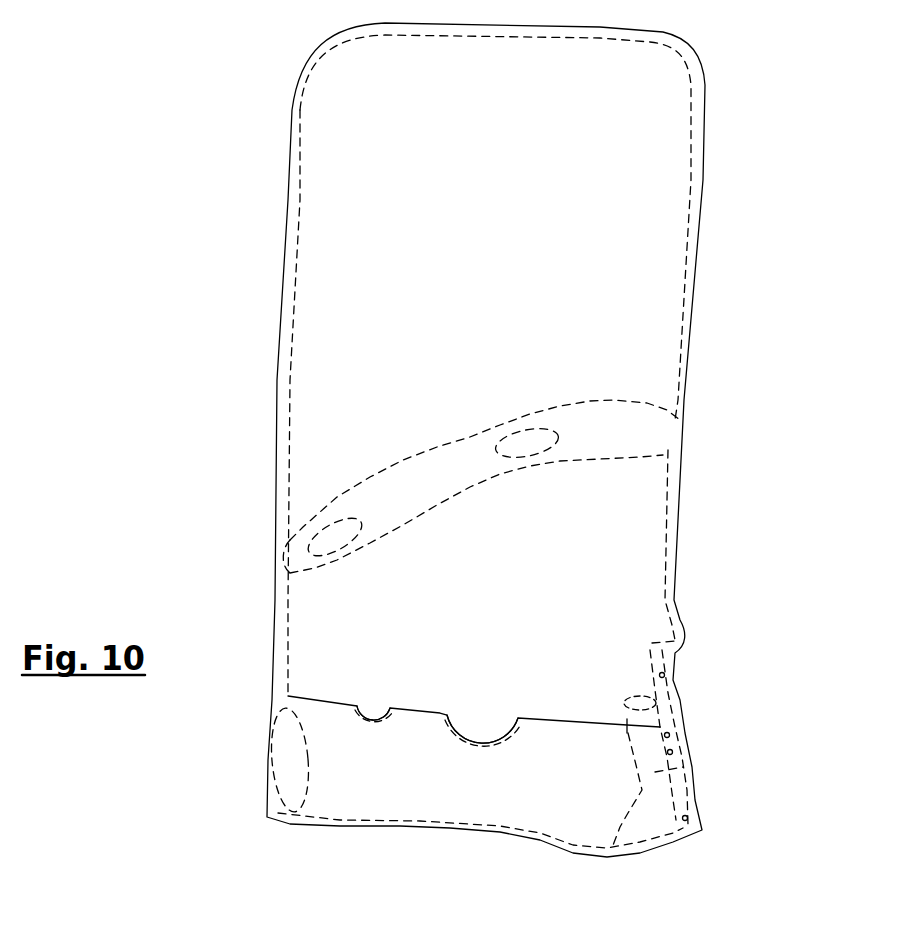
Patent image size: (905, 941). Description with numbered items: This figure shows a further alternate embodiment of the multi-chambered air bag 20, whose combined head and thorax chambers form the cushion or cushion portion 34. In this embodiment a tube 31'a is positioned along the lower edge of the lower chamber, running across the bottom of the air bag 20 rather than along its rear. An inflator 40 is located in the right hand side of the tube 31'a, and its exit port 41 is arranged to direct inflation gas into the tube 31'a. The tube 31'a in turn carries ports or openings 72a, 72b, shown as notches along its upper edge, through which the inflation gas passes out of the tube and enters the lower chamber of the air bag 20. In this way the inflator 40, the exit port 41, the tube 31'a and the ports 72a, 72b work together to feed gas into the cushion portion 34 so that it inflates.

The multi-chambered air bag 20 is at (232, 23).
The cushion portion 34 is at (320, 127).
The tube 31'a is at (464, 792).
The port 72b is at (375, 707).
The port 72a is at (478, 727).
The inflator 40 is at (688, 766).
The exit port 41 is at (612, 850).